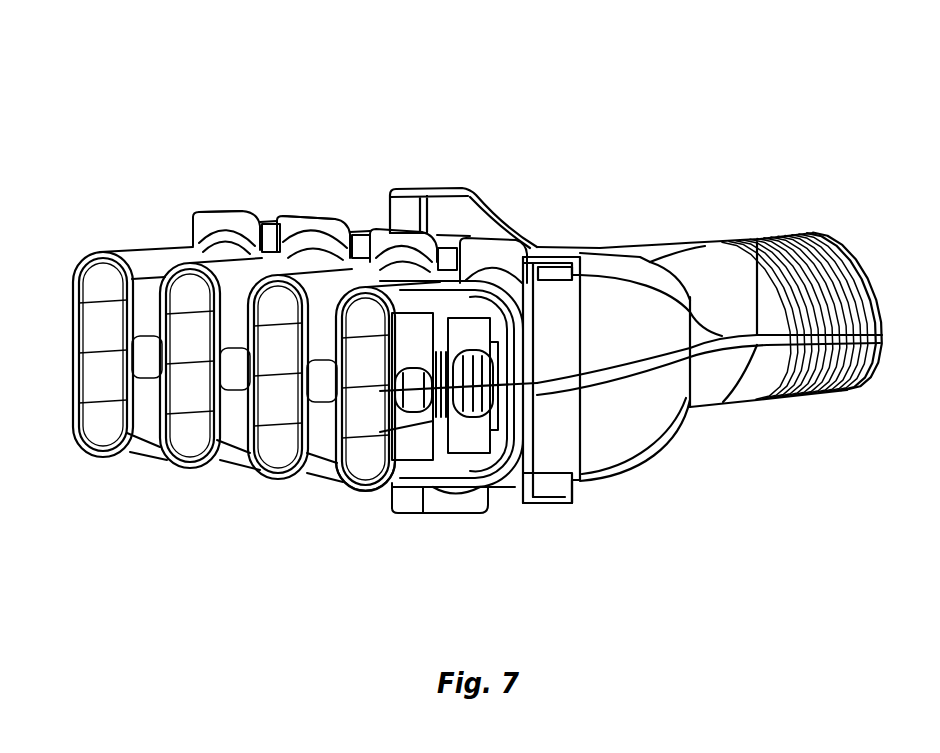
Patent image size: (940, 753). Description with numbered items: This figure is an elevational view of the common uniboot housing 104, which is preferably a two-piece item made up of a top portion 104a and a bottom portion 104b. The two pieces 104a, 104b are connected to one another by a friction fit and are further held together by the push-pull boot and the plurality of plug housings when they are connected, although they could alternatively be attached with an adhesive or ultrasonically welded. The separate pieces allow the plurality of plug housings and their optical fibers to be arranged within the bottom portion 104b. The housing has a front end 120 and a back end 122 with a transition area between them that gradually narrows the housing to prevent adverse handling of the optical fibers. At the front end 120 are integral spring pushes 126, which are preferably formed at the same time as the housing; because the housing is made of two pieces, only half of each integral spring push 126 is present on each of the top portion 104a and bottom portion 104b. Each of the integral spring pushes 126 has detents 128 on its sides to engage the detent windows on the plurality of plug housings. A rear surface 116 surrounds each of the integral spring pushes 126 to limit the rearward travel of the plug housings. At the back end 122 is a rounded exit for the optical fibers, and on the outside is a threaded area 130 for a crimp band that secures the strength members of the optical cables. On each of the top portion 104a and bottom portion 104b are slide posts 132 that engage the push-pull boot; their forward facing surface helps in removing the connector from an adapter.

The common uniboot housing 104 is at (672, 121).
The top portion 104a is at (560, 250).
The bottom portion 104b is at (663, 448).
The rear surface 116 is at (235, 211).
The front end 120 is at (124, 184).
The back end 122 is at (881, 294).
The integral spring pushes 126 is at (362, 484).
The detents 128 is at (468, 416).
The threaded area 130 is at (793, 402).
The slide posts 132 is at (440, 185).